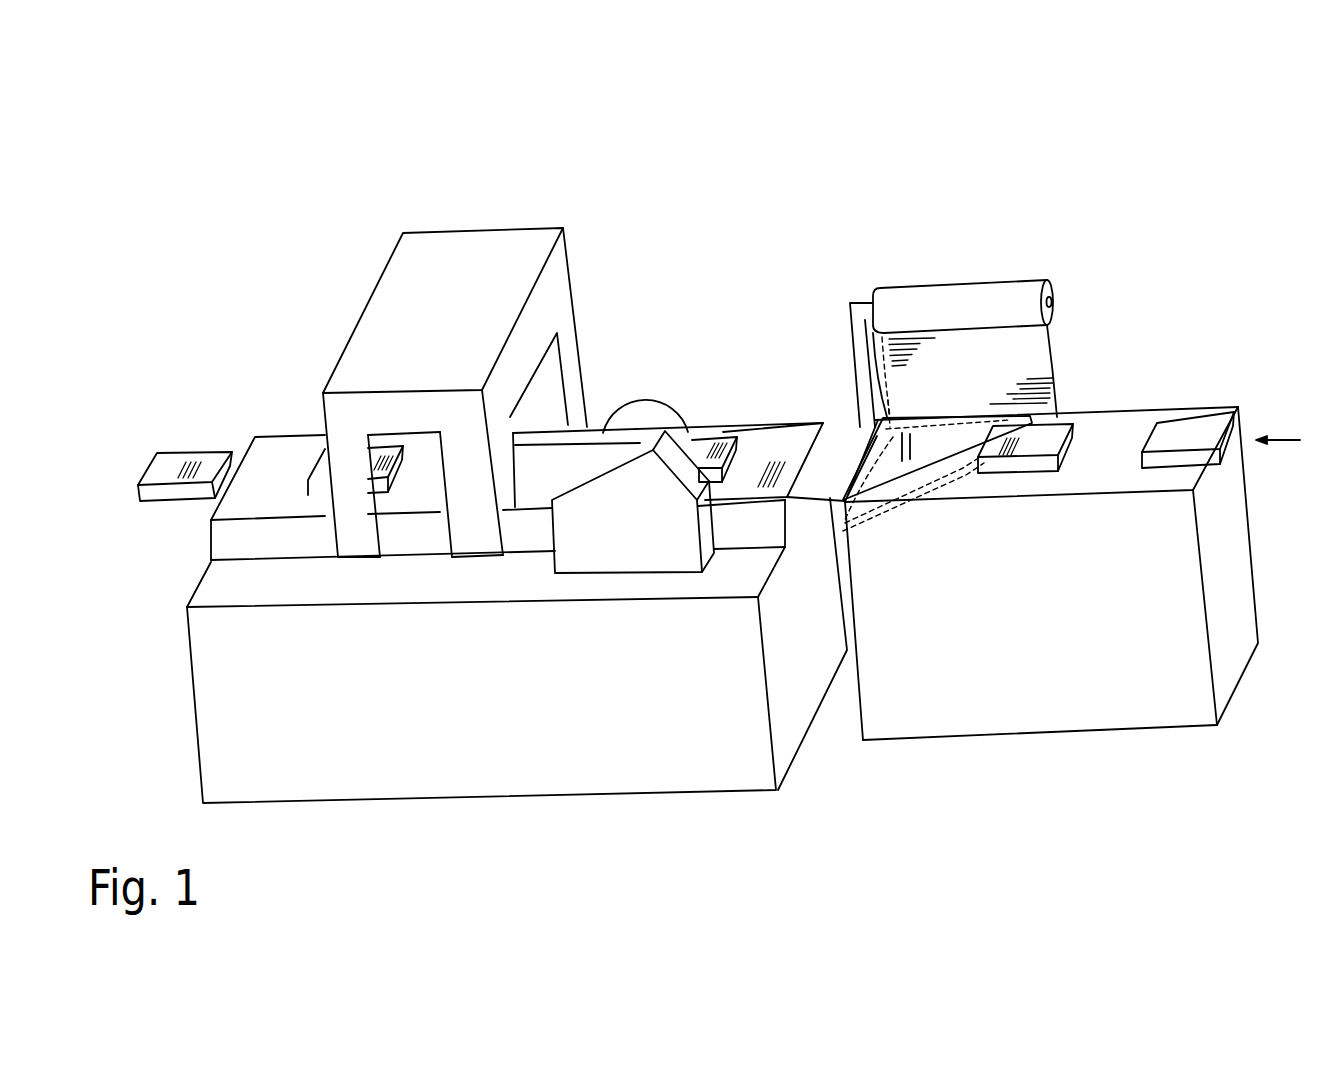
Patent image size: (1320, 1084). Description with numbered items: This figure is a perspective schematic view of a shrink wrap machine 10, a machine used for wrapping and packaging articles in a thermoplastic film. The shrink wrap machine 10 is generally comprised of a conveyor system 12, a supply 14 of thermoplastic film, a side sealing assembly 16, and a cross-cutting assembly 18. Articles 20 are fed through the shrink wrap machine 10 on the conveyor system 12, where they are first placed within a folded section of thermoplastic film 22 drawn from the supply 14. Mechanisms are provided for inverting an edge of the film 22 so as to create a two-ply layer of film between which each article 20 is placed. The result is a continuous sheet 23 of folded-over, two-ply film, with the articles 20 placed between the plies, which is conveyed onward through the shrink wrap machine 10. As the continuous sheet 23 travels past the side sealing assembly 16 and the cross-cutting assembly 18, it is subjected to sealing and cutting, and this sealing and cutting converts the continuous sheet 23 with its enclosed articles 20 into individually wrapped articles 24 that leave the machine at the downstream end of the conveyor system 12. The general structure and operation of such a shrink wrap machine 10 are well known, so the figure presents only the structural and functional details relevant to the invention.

The shrink wrap machine 10 is at (762, 222).
The conveyor system 12 is at (1108, 420).
The supply of thermoplastic film 14 is at (957, 288).
The side sealing assembly 16 is at (647, 370).
The cross-cutting assembly 18 is at (461, 232).
The article 20 is at (1188, 430).
The thermoplastic film 22 is at (948, 460).
The continuous sheet 23 is at (765, 440).
The individually wrapped article 24 is at (184, 452).